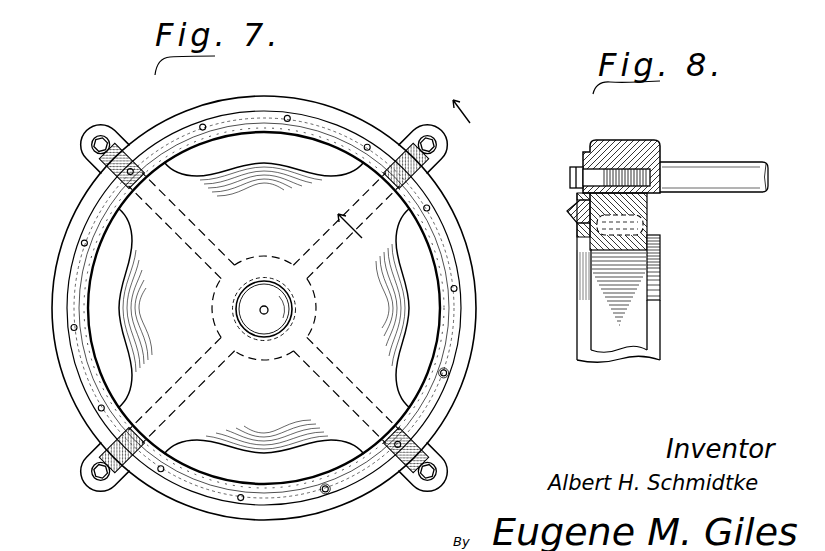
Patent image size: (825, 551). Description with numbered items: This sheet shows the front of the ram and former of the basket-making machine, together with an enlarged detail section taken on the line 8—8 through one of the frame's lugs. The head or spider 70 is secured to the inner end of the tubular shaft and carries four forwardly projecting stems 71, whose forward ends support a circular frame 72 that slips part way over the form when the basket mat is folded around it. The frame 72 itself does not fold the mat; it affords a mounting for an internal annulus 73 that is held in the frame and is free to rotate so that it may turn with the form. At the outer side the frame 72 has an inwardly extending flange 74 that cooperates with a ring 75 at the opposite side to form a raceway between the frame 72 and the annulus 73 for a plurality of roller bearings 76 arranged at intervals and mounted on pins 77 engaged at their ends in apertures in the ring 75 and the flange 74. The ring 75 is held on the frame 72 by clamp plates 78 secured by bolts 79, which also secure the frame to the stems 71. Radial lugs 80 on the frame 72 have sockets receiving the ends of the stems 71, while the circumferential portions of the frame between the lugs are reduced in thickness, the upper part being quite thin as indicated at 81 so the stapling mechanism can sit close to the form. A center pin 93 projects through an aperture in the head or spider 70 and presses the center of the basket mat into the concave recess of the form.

In FIG. 7, the section line 8— 8 is at (395, 161).
In FIG. 7, the head or spider 70 is at (249, 461).
In FIG. 8, the stems 71 is at (750, 162).
In FIG. 7, the circular frame 72 is at (167, 122).
In FIG. 8, the circular frame 72 is at (677, 133).
In FIG. 7, the internal annulus 73 is at (444, 356).
In FIG. 8, the internal annulus 73 is at (602, 254).
In FIG. 8, the inwardly extending flange 74 is at (663, 236).
In FIG. 7, the ring 75 is at (447, 237).
In FIG. 8, the ring 75 is at (578, 245).
In FIG. 7, the roller bearings 76 is at (450, 378).
In FIG. 8, the roller bearings 76 is at (632, 221).
In FIG. 7, the pins 77 is at (290, 115).
In FIG. 8, the pins 77 is at (580, 226).
In FIG. 7, the clamp plates 78 is at (118, 160).
In FIG. 8, the clamp plates 78 is at (573, 209).
In FIG. 7, the bolts 79 is at (100, 146).
In FIG. 8, the bolts 79 is at (570, 173).
In FIG. 7, the radial lugs 80 is at (103, 111).
In FIG. 8, the radial lugs 80 is at (628, 139).
In FIG. 7, the thin portion 81 is at (232, 94).
In FIG. 7, the center pin 93 is at (264, 323).